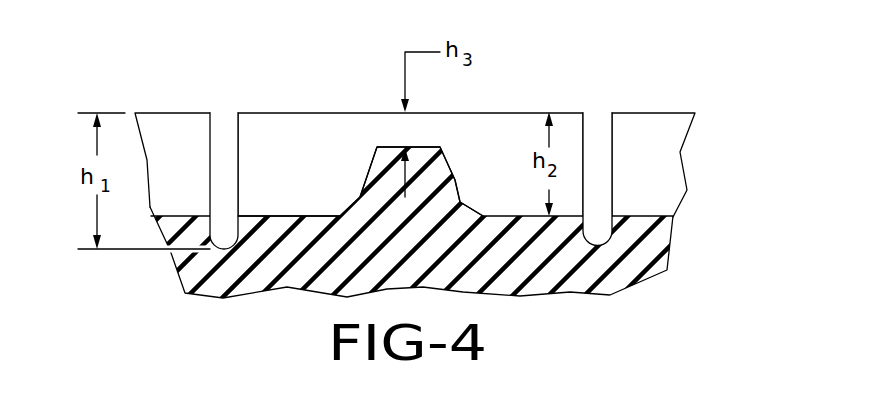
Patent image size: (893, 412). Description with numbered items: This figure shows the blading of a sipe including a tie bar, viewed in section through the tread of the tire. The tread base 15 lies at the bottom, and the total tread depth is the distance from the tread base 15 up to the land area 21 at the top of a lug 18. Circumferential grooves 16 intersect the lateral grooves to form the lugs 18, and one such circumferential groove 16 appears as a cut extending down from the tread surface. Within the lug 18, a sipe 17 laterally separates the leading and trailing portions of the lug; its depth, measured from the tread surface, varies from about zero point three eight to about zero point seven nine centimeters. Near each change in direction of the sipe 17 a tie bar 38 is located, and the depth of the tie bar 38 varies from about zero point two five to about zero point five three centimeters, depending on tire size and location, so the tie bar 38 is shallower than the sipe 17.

The tread base 15 is at (648, 257).
The circumferential groove 16 is at (223, 183).
The sipe 17 is at (282, 215).
The lug 18 is at (285, 127).
The land area 21 is at (568, 112).
The tie bar 38 is at (373, 148).